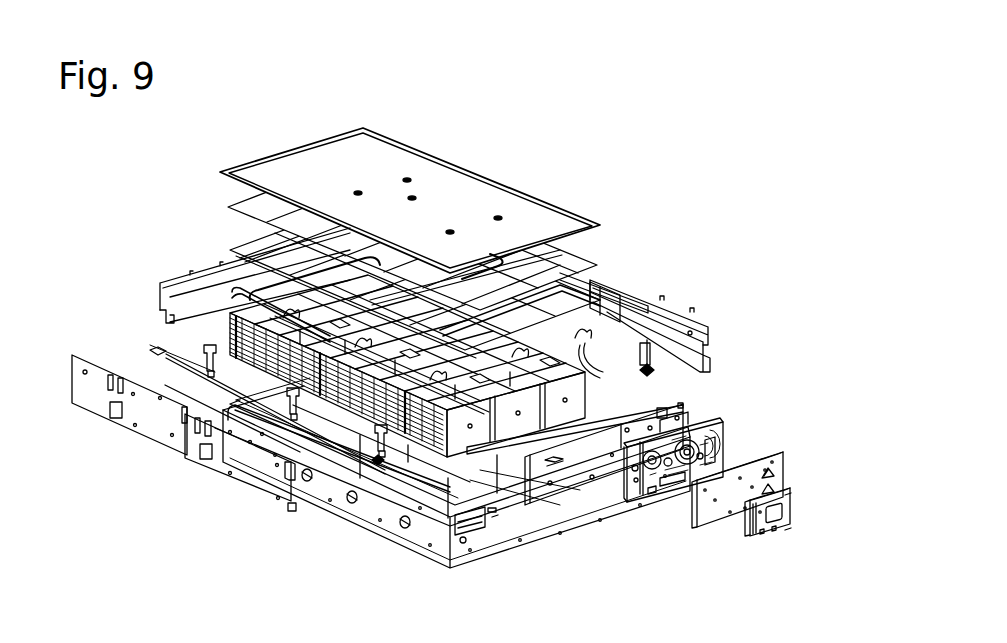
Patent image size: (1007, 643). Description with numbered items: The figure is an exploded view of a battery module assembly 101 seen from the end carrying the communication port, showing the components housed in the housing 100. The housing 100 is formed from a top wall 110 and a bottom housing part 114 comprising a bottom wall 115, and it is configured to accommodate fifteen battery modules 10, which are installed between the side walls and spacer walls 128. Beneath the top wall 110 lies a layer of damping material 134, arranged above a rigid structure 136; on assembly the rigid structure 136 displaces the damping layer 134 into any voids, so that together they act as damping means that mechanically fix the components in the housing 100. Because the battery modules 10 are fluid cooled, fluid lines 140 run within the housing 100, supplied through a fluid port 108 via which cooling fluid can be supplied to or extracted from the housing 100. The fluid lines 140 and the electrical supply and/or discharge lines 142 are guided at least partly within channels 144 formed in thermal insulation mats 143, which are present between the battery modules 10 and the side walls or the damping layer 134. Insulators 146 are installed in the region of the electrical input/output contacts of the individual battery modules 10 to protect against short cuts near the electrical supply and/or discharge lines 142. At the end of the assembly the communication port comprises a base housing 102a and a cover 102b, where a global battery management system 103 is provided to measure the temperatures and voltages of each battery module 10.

The housing 100 is at (668, 145).
The battery module assembly 101 is at (468, 369).
The top wall 110 is at (463, 185).
The channels 144 is at (208, 284).
The layer of damping material 134 is at (572, 263).
The rigid structure 136 is at (548, 290).
The insulators 146 is at (642, 300).
The battery module 10 is at (580, 400).
The fluid port 108 is at (157, 353).
The fluid lines 140 is at (178, 416).
The electrical supply and/or discharge lines 142 is at (303, 473).
The thermal insulation mats 143 is at (170, 292).
The bottom housing part 114 is at (417, 543).
The spacer walls 128 is at (403, 480).
The bottom wall 115 is at (465, 567).
The base housing 102a is at (712, 422).
The cover 102b is at (783, 467).
The global battery management system 103 is at (763, 522).